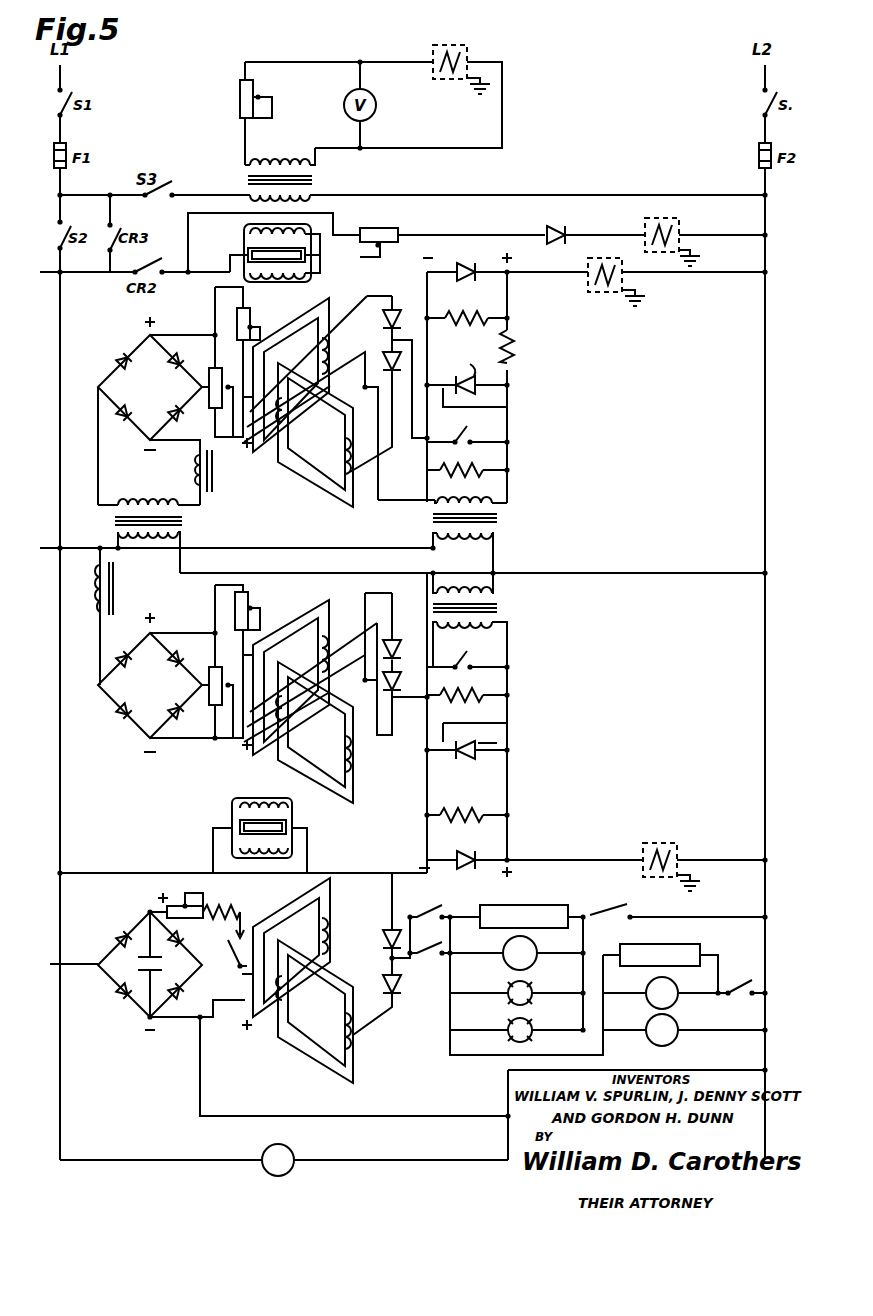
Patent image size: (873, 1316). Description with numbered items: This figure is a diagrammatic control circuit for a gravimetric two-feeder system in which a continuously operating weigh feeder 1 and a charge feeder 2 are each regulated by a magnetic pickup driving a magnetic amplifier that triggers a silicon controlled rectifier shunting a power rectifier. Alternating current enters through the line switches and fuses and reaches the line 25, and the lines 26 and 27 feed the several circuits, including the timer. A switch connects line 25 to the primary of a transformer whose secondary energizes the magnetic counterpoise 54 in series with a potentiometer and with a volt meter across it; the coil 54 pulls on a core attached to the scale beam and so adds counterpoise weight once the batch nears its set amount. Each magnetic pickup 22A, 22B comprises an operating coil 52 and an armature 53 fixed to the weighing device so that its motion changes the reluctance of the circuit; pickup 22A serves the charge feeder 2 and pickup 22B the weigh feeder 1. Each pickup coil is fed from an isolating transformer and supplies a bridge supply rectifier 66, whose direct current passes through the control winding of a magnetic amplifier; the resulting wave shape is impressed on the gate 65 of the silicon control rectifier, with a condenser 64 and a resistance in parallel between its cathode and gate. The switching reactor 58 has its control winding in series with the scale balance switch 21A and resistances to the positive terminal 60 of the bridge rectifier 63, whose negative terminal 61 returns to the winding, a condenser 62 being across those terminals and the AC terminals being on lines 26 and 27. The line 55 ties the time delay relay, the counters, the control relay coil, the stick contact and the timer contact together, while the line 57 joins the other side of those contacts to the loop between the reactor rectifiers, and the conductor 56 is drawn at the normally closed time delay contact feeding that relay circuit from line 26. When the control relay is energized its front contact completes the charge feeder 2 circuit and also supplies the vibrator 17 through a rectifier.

The continuously operating weigh feeder 1 is at (651, 844).
The charge feeder 2 is at (586, 264).
The vibrator 17 is at (644, 221).
The scale balance switch 21A is at (233, 968).
The magnetic pickup 22A is at (216, 490).
The magnetic pickup 22B is at (115, 575).
The line 25 is at (60, 195).
The line 26 is at (768, 200).
The line 27 is at (60, 273).
The operating coil 52 is at (193, 464).
The armature 53 is at (214, 468).
The magnetic counterpoise 54 is at (442, 45).
The line 55 is at (450, 917).
The conductor 56 is at (583, 917).
The line 57 is at (392, 960).
The switching reactor 58 is at (312, 1058).
The positive terminal 60 is at (144, 910).
The negative terminal 61 is at (145, 1017).
The condenser 62 is at (150, 960).
The bridge rectifier 63 is at (120, 977).
The condenser 64 is at (462, 434).
The gate 65 is at (512, 470).
The bridge supply rectifier 66 is at (150, 536).